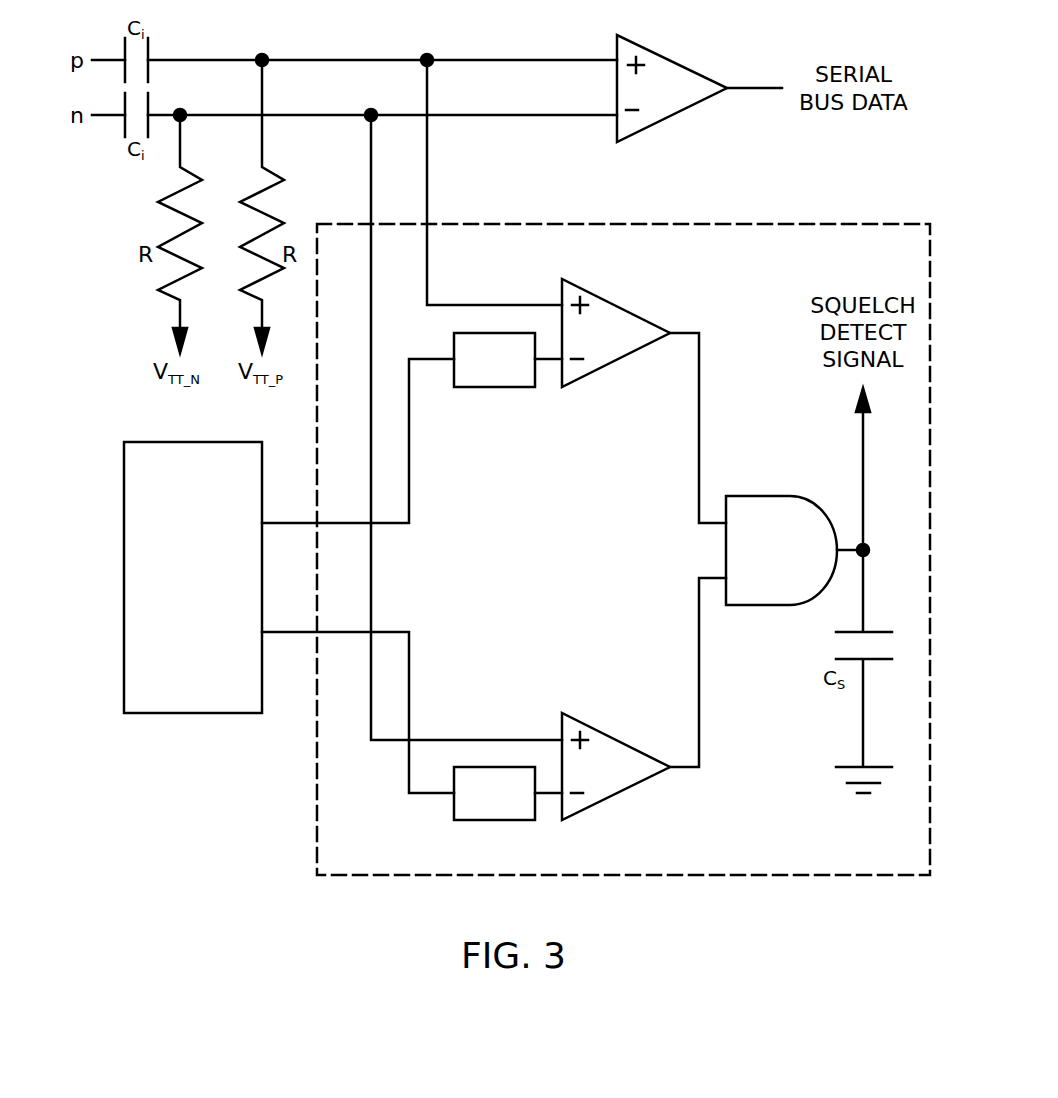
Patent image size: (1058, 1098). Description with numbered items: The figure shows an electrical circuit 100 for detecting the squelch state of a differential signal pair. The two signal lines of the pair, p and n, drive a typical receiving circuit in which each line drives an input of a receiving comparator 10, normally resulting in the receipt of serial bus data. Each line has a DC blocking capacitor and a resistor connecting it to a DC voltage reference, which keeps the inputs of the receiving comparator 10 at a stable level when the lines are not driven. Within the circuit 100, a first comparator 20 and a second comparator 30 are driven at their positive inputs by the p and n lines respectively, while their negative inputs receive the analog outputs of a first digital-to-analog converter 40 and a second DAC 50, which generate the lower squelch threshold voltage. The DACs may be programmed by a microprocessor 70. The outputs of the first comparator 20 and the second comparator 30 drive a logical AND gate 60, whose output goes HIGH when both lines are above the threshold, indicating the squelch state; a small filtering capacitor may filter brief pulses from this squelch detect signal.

The receiving comparator 10 is at (683, 63).
The first comparator 20 is at (630, 308).
The second comparator 30 is at (613, 733).
The first digital-to-analog converter 40 is at (490, 387).
The second DAC 50 is at (490, 820).
The logical AND gate 60 is at (765, 496).
The microprocessor 70 is at (180, 604).
The electrical circuit 100 is at (535, 224).